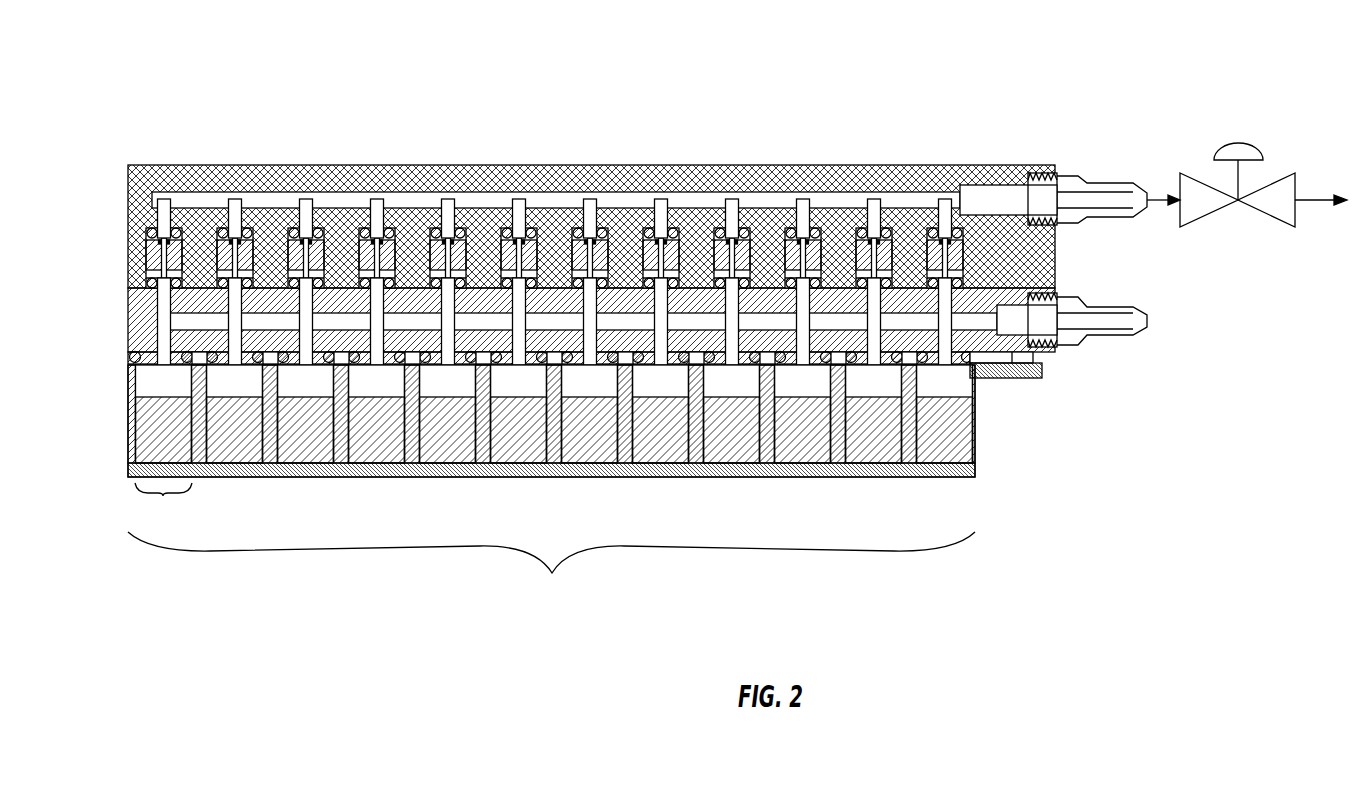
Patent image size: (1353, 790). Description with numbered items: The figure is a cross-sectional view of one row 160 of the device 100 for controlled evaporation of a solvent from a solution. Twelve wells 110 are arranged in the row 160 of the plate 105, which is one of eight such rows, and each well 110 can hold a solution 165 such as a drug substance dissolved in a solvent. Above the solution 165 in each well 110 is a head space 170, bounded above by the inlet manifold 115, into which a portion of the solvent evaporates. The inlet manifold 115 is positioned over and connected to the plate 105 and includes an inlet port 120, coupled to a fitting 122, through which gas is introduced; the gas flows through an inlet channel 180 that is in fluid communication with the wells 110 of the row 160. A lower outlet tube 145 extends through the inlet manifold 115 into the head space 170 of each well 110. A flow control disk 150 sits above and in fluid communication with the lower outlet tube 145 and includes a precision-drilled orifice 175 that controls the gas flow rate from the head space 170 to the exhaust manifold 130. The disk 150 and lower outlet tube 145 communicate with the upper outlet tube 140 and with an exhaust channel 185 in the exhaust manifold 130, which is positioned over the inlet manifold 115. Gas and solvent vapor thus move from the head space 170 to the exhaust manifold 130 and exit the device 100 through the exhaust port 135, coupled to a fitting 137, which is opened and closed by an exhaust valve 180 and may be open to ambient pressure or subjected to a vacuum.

The device 100 is at (153, 92).
The plate 105 is at (890, 472).
The well 110 is at (163, 504).
The inlet manifold 115 is at (975, 365).
The inlet port 120 is at (1023, 317).
The fitting 122 is at (1095, 307).
The exhaust manifold 130 is at (768, 180).
The exhaust port 135 is at (995, 190).
The fitting 137 is at (1098, 212).
The upper outlet tube 140 is at (163, 222).
The lower outlet tube 145 is at (150, 342).
The flow control disk 150 is at (152, 256).
The row 160 is at (551, 569).
The solution 165 is at (960, 436).
The head space 170 is at (148, 385).
The orifice 175 is at (162, 243).
The inlet channel 180 is at (1245, 143).
The exhaust channel 185 is at (553, 202).